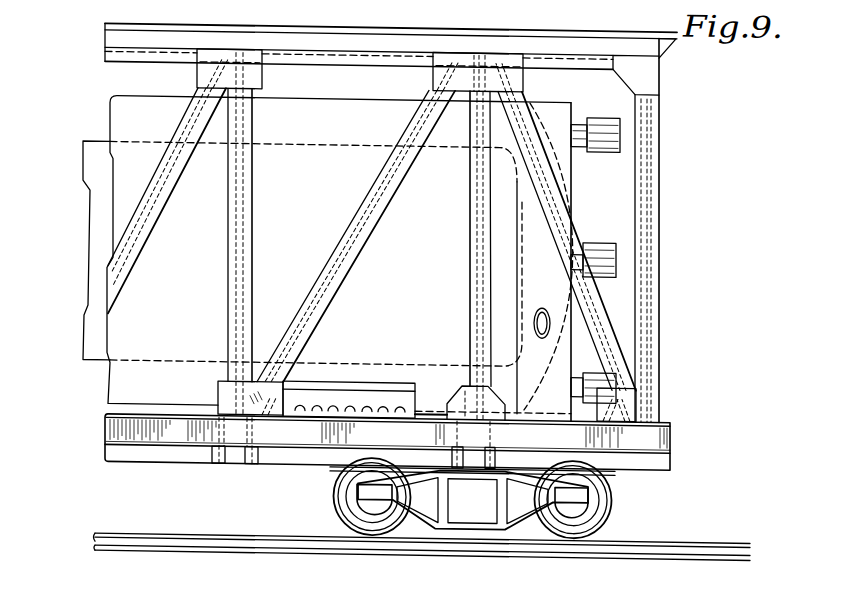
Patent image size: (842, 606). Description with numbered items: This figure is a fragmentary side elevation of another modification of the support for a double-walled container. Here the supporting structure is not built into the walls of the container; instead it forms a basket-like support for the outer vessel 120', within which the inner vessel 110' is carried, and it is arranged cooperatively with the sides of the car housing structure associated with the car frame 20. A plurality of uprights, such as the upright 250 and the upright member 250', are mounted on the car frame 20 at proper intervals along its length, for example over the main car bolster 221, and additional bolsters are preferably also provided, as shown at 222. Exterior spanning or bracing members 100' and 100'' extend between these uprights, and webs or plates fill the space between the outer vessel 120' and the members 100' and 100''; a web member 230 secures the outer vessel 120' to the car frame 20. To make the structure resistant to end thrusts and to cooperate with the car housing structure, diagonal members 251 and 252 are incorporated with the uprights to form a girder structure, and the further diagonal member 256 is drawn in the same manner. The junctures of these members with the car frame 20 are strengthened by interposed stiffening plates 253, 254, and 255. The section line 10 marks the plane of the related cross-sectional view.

The section line 10- 10 is at (535, 76).
The car frame 20 is at (672, 436).
The exterior spanning member 100' is at (263, 74).
The exterior bracing member 100'' is at (478, 48).
The inner vessel 110' is at (72, 250).
The outer vessel 120' is at (327, 258).
The main car bolster 221 is at (472, 437).
The additional bolster 222 is at (237, 461).
The web member 230 is at (340, 396).
The upright 250 is at (267, 235).
The upright member 250' is at (453, 238).
The diagonal member 251 is at (603, 329).
The diagonal member 252 is at (355, 249).
The stiffening plate 253 is at (635, 393).
The stiffening plate 254 is at (438, 72).
The stiffening plate 255 is at (222, 390).
The left diagonal brace 256 is at (140, 252).